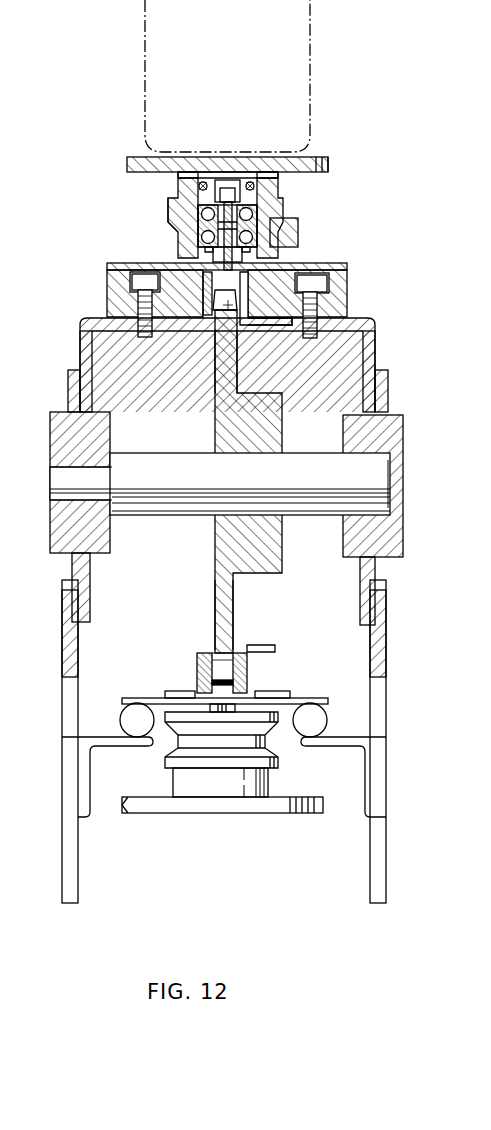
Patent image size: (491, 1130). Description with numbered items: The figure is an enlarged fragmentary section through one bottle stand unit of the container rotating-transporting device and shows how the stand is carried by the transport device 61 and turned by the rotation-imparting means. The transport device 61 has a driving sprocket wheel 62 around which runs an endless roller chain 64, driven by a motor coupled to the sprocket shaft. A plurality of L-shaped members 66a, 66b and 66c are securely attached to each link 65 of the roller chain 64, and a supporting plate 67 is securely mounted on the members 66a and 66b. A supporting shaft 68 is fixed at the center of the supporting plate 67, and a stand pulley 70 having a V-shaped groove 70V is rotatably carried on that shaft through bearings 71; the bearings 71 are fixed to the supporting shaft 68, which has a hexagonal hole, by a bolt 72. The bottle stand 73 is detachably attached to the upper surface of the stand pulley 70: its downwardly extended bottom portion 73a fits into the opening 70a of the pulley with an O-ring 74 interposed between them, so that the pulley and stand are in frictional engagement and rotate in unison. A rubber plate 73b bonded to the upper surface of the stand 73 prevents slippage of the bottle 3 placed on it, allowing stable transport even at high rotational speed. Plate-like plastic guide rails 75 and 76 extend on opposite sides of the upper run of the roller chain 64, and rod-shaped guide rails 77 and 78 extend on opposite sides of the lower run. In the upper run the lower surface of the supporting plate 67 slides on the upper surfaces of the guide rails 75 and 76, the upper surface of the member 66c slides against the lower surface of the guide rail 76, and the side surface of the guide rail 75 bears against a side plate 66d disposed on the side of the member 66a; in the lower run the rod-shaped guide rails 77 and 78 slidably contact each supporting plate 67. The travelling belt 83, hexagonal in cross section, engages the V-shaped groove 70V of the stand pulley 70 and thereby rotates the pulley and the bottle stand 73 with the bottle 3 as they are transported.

The bottle 3 is at (312, 38).
The transport device 61 is at (367, 315).
The driving sprocket wheel 62 is at (253, 566).
The roller chain 64 is at (210, 326).
The link 65 is at (236, 314).
The L-shaped member 66a is at (206, 284).
The L-shaped member 66b is at (260, 290).
The L-shaped member 66c is at (262, 325).
The side plate 66d is at (208, 313).
The supporting plate 67 is at (135, 264).
The supporting shaft 68 is at (220, 260).
The stand pulley 70 is at (280, 190).
The V-shaped groove 70V is at (178, 231).
The opening 70a is at (246, 175).
The bearing 71 is at (268, 226).
The bolt 72 is at (228, 170).
The bottle stand 73 is at (127, 166).
The bottom portion 73a is at (200, 172).
The rubber plate 73b is at (134, 158).
The O-ring 74 is at (203, 190).
The plate-like guide rail 75 is at (112, 288).
The plate-like guide rail 76 is at (343, 283).
The rod-shaped guide rail 77 is at (128, 720).
The rod-shaped guide rail 78 is at (318, 724).
The travelling belt 83 is at (298, 234).